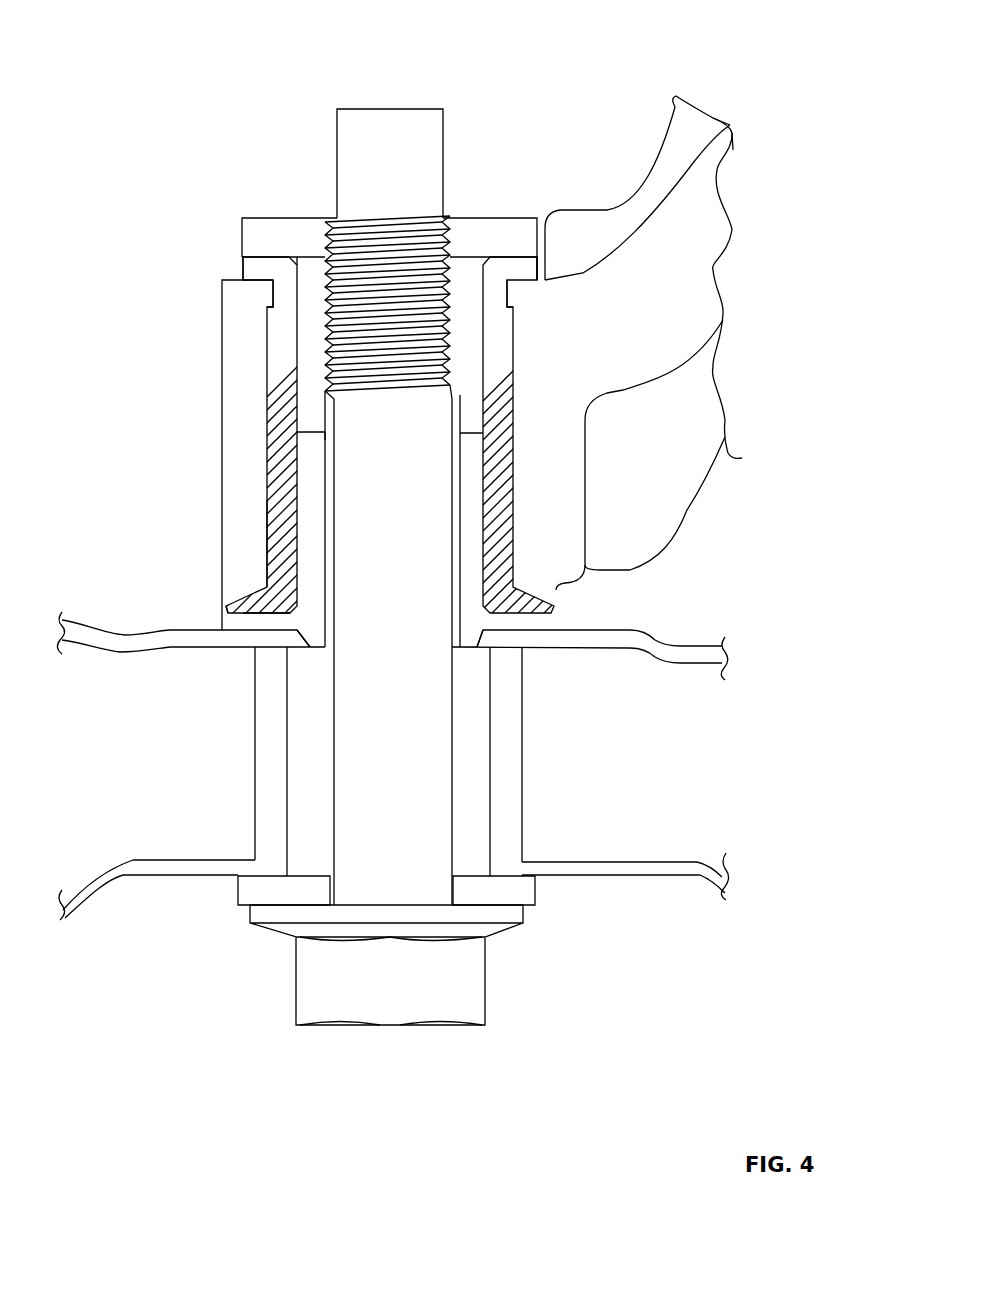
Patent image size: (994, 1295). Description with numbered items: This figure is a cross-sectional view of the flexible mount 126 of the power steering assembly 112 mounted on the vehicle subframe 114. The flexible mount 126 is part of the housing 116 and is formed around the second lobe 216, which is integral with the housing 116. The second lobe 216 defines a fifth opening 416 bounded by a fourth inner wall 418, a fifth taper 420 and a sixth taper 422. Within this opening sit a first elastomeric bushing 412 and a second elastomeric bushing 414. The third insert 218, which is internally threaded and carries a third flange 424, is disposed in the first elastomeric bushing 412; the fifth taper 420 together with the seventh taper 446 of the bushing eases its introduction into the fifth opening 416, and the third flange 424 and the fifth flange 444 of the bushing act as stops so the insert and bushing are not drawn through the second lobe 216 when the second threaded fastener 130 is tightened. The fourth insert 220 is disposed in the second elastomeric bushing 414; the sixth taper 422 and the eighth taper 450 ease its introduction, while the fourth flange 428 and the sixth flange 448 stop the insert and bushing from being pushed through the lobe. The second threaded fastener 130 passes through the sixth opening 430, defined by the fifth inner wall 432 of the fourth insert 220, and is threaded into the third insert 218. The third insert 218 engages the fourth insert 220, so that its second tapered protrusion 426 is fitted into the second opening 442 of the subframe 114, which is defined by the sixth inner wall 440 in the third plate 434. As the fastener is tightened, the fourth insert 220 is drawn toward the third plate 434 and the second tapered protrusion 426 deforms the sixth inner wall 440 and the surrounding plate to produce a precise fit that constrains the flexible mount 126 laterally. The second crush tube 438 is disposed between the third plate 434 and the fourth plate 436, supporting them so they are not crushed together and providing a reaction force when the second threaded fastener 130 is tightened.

The power steering assembly 112 is at (624, 86).
The vehicle subframe 114 is at (658, 642).
The housing 116 is at (576, 137).
The flexible mount 126 is at (528, 187).
The second threaded fastener 130 is at (327, 1008).
The second lobe 216 is at (226, 308).
The third insert 218 is at (317, 230).
The fourth insert 220 is at (318, 497).
The first elastomeric bushing 412 is at (280, 390).
The second elastomeric bushing 414 is at (278, 538).
The fifth opening 416 is at (263, 432).
The fourth inner wall 418 is at (268, 457).
The fifth taper 420 is at (262, 283).
The sixth taper 422 is at (262, 588).
The third flange 424 is at (267, 232).
The second tapered protrusion 426 is at (320, 637).
The fourth flange 428 is at (237, 624).
The sixth opening 430 is at (462, 553).
The fifth inner wall 432 is at (462, 513).
The third plate 434 is at (147, 640).
The fourth plate 436 is at (173, 867).
The second crush tube 438 is at (270, 800).
The sixth inner wall 440 is at (478, 640).
The second opening 442 is at (458, 652).
The fifth flange 444 is at (252, 266).
The seventh taper 446 is at (507, 440).
The sixth flange 448 is at (235, 601).
The eighth taper 450 is at (505, 455).